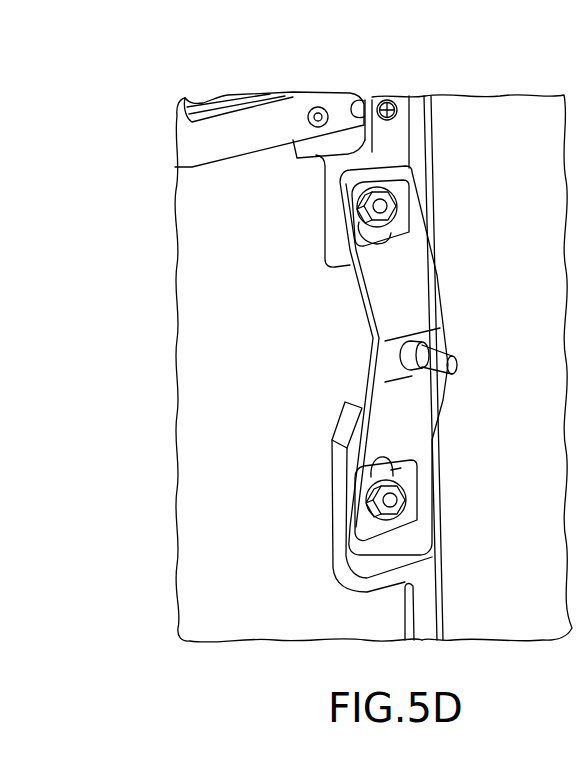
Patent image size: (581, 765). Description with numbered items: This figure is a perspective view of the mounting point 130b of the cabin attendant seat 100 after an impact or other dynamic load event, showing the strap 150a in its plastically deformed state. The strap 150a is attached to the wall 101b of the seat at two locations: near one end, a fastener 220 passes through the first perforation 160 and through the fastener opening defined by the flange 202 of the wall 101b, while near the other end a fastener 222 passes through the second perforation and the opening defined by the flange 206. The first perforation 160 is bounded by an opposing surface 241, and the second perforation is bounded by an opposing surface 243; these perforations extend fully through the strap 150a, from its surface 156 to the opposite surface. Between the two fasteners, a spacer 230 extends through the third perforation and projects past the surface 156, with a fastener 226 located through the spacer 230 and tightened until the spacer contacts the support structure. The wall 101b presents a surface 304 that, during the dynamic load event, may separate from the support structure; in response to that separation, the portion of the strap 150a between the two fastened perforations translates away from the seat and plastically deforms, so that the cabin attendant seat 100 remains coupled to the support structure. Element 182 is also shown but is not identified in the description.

The cabin attendant seat 100 is at (167, 79).
The mounting point 130b is at (452, 101).
The surface of wall 304 is at (428, 144).
The flange 202 is at (330, 177).
The fastener 220 is at (397, 204).
The first perforation 160 is at (376, 238).
The strap 150a is at (426, 273).
The surface of first perforation 241 is at (353, 229).
The surface of strap 156 is at (412, 315).
The spacer 230 is at (400, 356).
The fastener 226 is at (458, 367).
The wall 101b is at (245, 353).
The surface of second perforation 243 is at (362, 480).
The clip 182 is at (393, 468).
The fastener 222 is at (402, 508).
The flange 206 is at (340, 554).